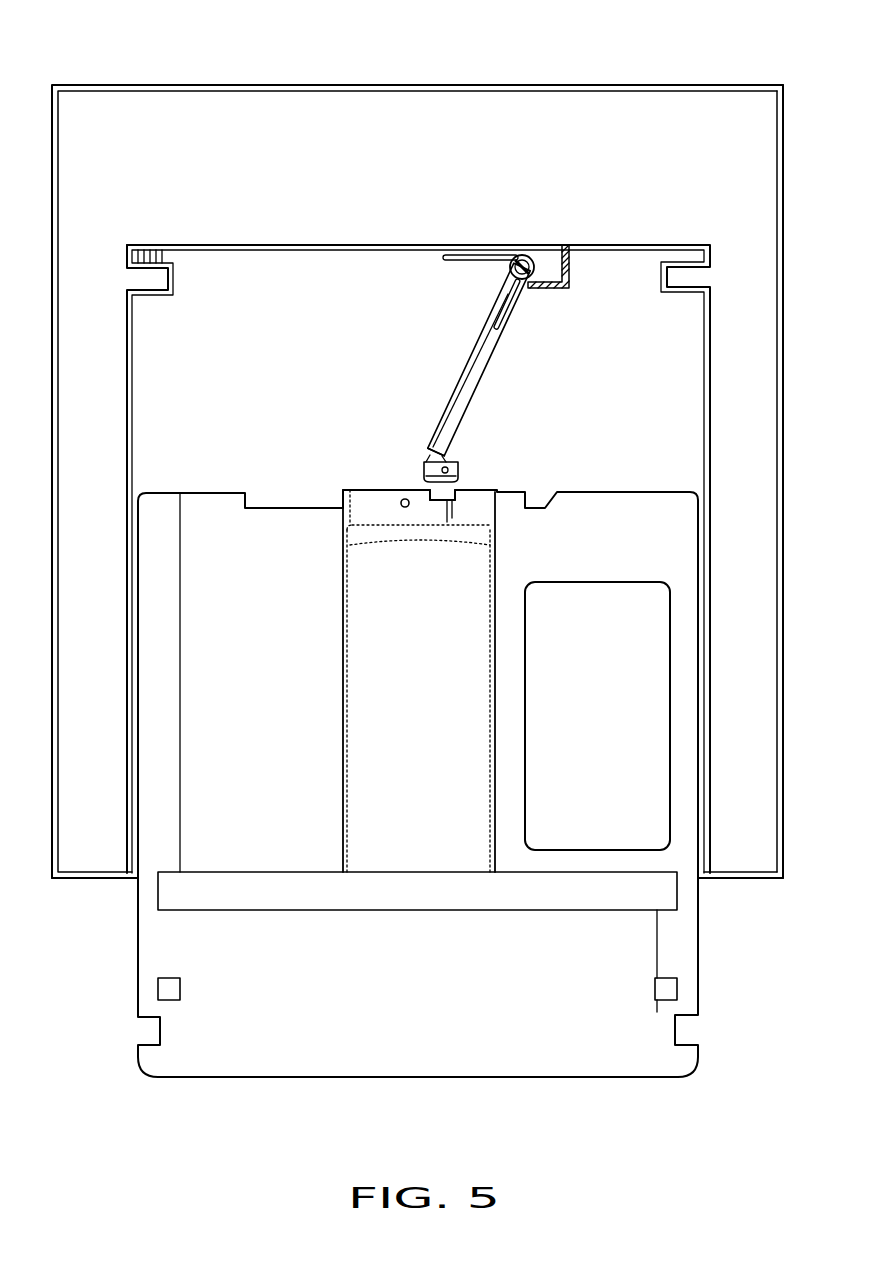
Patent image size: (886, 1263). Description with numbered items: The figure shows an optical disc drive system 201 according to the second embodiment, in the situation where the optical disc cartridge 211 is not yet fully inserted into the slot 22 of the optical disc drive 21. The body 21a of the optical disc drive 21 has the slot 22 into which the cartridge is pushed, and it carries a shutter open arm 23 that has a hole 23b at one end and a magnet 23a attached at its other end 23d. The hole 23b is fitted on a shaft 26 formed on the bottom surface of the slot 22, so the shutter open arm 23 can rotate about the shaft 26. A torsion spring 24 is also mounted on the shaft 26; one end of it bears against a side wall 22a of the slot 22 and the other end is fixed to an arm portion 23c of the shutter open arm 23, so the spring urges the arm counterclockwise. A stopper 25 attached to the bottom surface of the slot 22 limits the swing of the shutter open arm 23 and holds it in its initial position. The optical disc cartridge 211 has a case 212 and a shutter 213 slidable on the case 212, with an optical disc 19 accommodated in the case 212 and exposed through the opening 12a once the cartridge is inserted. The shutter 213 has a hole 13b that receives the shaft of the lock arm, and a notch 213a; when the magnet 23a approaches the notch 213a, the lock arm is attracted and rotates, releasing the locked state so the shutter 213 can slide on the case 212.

The optical disc drive 21 is at (708, 84).
The body 21a is at (766, 198).
The slot 22 is at (634, 246).
The side wall 22a is at (320, 248).
The shutter open arm 23 is at (452, 337).
The magnet 23a is at (458, 470).
The hole 23b is at (509, 283).
The arm portion 23c is at (470, 373).
The other end 23d is at (430, 450).
The torsion spring 24 is at (505, 322).
The stopper 25 is at (574, 290).
The shaft 26 is at (532, 258).
The optical disc drive system 201 is at (55, 898).
The optical disc cartridge 211 is at (360, 1078).
The case 212 is at (700, 980).
The shutter 213 is at (342, 640).
The notch 213a is at (458, 492).
The opening 12a is at (378, 522).
The hole 13b is at (407, 507).
The optical disc 19 is at (468, 725).